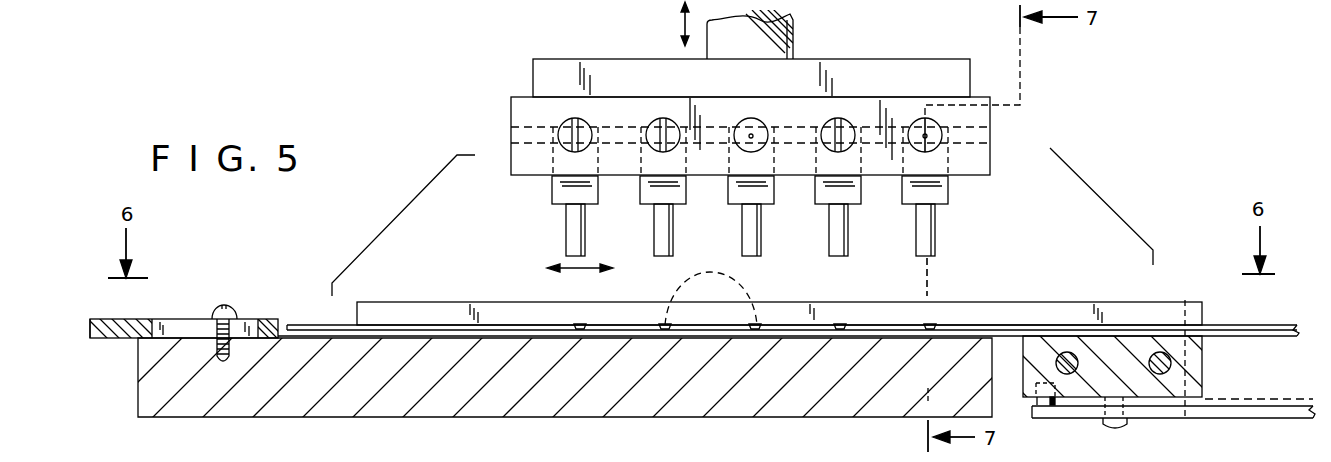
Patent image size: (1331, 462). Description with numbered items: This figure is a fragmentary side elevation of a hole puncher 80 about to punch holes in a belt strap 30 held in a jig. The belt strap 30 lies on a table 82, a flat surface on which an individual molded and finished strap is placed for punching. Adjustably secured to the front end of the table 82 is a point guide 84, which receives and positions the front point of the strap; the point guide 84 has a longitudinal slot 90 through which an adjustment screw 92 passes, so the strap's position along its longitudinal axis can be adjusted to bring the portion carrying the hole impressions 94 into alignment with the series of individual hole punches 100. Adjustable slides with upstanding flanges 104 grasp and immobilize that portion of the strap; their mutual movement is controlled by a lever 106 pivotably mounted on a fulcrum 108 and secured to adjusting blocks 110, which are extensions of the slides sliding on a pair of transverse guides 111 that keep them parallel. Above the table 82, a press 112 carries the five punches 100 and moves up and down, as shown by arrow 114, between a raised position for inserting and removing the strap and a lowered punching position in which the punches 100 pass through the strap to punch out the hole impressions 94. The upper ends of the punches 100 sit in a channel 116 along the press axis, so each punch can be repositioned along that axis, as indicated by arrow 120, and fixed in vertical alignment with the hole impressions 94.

The belt strap 30 is at (328, 324).
The hole puncher 80 is at (492, 132).
The table 82 is at (182, 402).
The point guide 84 is at (128, 342).
The longitudinal slot 90 is at (196, 318).
The adjustment screw 92 is at (238, 306).
The hole impressions 94 is at (755, 299).
The individual hole punches 100 is at (573, 236).
The upstanding flanges 104 is at (428, 315).
The lever 106 is at (1218, 413).
The fulcrum 108 is at (1120, 426).
The adjusting blocks 110 is at (1190, 371).
The transverse guides 111 is at (1168, 356).
The press 112 is at (527, 75).
The arrow 114 is at (683, 30).
The channel 116 is at (995, 133).
The arrow 120 is at (560, 275).